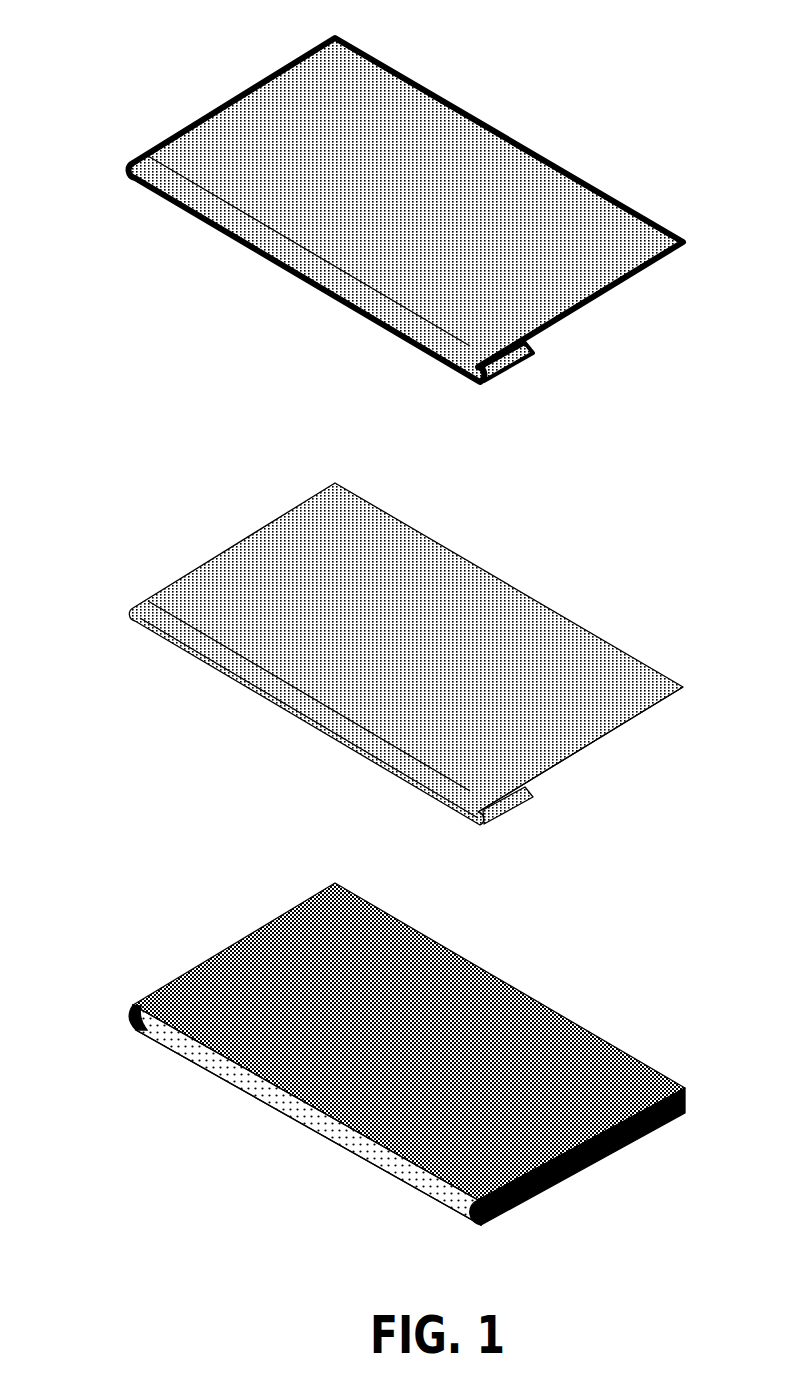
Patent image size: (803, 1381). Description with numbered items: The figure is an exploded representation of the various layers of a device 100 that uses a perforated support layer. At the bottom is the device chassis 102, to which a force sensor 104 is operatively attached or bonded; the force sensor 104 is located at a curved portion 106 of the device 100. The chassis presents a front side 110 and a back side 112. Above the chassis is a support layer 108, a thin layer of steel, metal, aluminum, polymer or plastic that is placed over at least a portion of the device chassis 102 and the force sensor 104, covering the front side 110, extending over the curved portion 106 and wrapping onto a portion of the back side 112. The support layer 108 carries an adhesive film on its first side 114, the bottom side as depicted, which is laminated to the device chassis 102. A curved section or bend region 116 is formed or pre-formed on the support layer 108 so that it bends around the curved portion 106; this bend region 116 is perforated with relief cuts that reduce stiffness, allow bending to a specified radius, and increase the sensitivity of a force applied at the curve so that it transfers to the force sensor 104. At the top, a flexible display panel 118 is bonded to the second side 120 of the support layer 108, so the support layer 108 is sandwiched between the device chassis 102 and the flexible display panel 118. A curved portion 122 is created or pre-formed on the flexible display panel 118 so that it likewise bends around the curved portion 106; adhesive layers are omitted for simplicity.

The device 100 is at (136, 42).
The device chassis 102 is at (592, 1026).
The force sensor 104 is at (283, 1108).
The curved portion 106 is at (352, 1180).
The support layer 108 is at (592, 626).
The front side 110 is at (409, 1041).
The back side 112 is at (613, 1157).
The first side 114 is at (635, 727).
The bend region 116 is at (300, 742).
The flexible display panel 118 is at (592, 184).
The second side 120 is at (383, 534).
The curved portion 122 is at (329, 318).